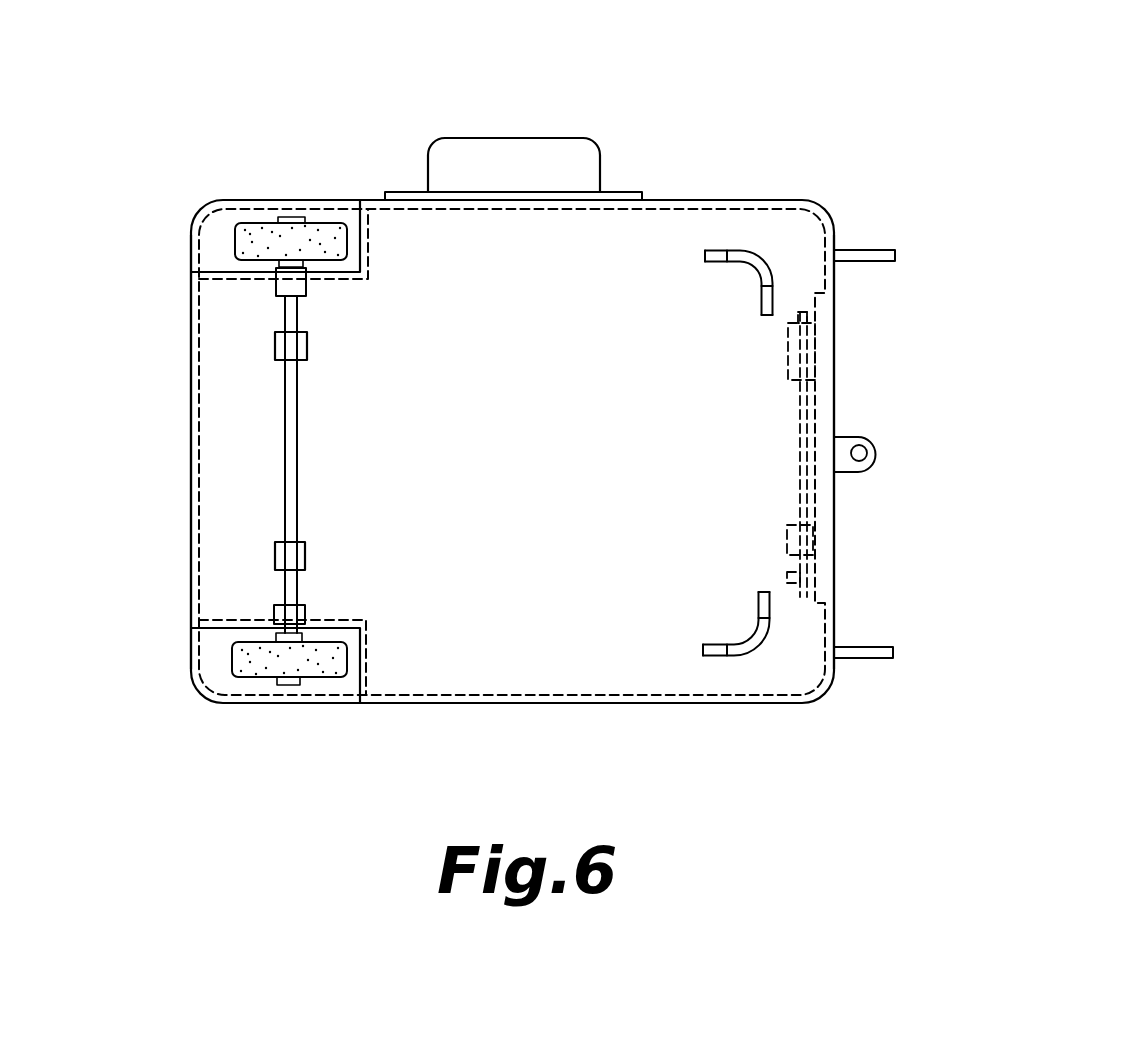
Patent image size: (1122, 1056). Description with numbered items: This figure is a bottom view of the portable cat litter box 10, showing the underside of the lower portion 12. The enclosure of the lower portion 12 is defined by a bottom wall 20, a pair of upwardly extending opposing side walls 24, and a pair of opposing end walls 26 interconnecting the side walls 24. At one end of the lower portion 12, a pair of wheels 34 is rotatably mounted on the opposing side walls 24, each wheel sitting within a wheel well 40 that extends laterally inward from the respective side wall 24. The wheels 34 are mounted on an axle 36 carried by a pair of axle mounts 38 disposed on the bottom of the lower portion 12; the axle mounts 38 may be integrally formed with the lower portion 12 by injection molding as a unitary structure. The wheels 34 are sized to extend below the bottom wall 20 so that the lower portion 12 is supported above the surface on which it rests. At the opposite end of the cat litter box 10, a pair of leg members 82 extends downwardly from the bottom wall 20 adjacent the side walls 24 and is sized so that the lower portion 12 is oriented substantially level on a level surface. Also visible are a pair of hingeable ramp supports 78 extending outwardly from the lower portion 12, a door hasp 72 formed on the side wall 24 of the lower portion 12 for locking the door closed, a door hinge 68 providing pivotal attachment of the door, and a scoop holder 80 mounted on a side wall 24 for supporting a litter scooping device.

The portable cat litter box 10 is at (852, 80).
The lower portion 12 is at (377, 703).
The bottom wall 20 is at (548, 459).
The side walls 24 is at (720, 200).
The end walls 26 is at (190, 503).
The wheels 34 is at (260, 245).
The axle 36 is at (284, 446).
The axle mounts 38 is at (286, 345).
The wheel wells 40 is at (172, 225).
The door hinge 68 is at (800, 425).
The door hasp 72 is at (868, 453).
The ramp supports 78 is at (870, 250).
The scoop holder 80 is at (510, 138).
The leg members 82 is at (770, 268).